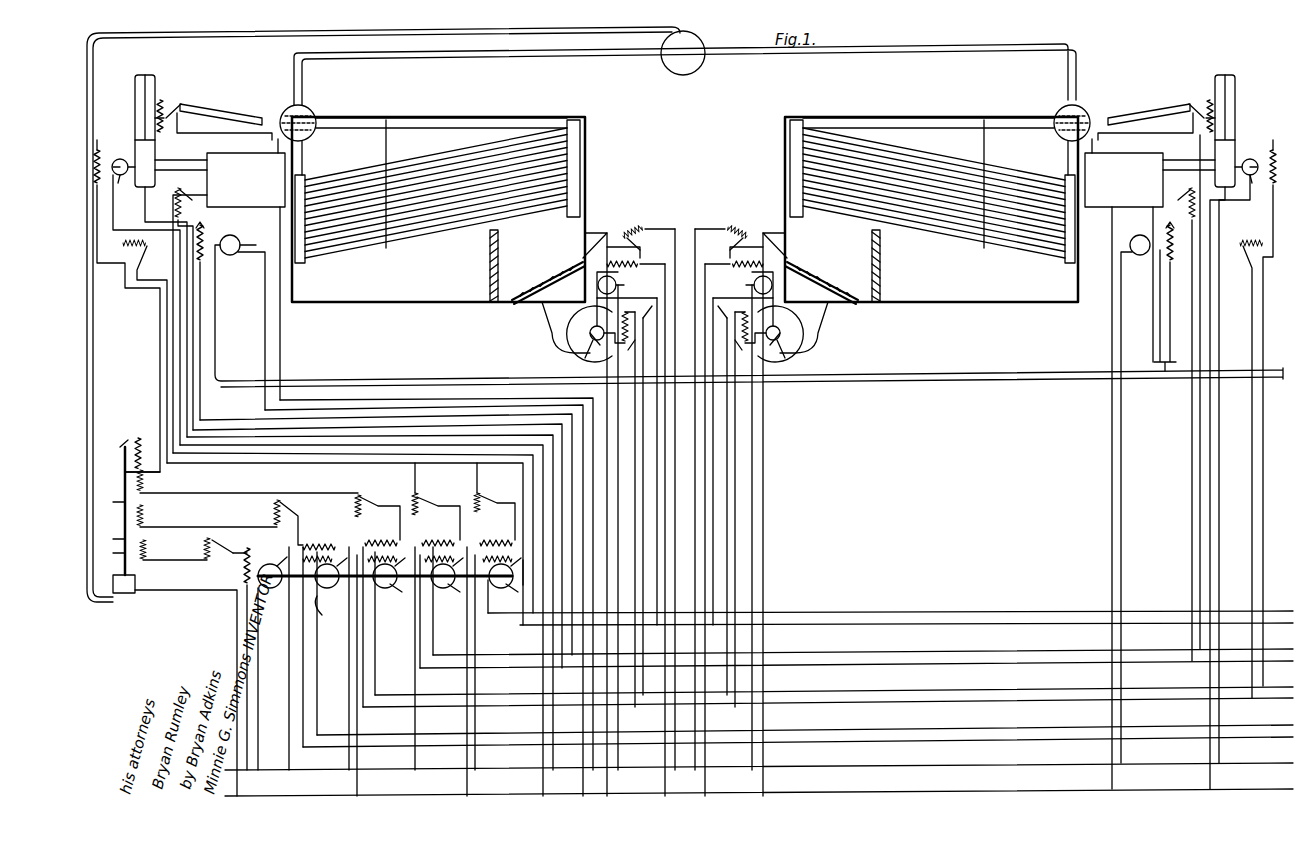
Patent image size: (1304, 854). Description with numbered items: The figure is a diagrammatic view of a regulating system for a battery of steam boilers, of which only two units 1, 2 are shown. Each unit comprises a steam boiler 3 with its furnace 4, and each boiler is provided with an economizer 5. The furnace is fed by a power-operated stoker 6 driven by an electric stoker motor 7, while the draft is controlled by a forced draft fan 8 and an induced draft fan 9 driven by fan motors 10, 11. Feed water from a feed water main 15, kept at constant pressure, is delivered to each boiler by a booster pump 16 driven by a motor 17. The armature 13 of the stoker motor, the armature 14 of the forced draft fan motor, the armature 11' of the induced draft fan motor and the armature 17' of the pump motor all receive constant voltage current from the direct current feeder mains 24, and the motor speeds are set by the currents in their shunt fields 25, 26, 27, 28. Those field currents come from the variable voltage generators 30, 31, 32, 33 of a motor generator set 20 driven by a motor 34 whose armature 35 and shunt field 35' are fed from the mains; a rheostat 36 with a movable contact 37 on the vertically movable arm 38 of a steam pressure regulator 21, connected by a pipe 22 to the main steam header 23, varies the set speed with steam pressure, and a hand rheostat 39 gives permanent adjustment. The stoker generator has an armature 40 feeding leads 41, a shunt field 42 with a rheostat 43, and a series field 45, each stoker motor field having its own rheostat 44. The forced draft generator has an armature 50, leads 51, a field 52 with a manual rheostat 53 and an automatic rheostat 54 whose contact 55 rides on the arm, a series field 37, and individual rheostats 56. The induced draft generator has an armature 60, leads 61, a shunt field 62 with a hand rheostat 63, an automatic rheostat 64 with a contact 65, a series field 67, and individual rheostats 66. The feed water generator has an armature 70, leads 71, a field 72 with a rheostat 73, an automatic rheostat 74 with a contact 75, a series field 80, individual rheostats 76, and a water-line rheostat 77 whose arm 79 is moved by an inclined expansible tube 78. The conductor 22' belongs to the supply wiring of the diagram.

The boiler unit 1 is at (508, 117).
The boiler unit 2 is at (878, 117).
The steam boiler 3 is at (685, 191).
The furnace 4 is at (685, 267).
The economizer 5 is at (685, 180).
The stoker 6 is at (596, 233).
The stoker motor 7 is at (685, 443).
The forced draft fan 8 is at (556, 345).
The induced draft fan 9 is at (147, 188).
The forced draft fan motor 10 is at (685, 321).
The induced draft fan motor 11 is at (685, 147).
The armature of induced draft fan motor 11' is at (686, 180).
The armature of stoker motor 13 is at (685, 523).
The armature of forced draft fan motor 14 is at (679, 356).
The feed water main 15 is at (380, 382).
The booster pump 16 is at (230, 256).
The feed water pump motor 17 is at (691, 216).
The armature of feed water pump motor 17' is at (256, 245).
The motor generator set 20 is at (186, 687).
The steam pressure regulator 21 is at (135, 584).
The pipe 22 is at (383, 314).
The supply conductor 22' is at (685, 68).
The main steam header 23 is at (694, 50).
The constant voltage direct current feeder mains 24 is at (894, 793).
The shunt field of stoker motor 25 is at (685, 519).
The shunt field of forced draft fan motor 26 is at (680, 352).
The shunt field of induced draft fan motor 27 is at (99, 140).
The shunt field of feed water pump motor 28 is at (688, 316).
The generator for forced draft fan motors 30 is at (331, 585).
The generator for induced draft fan motors 31 is at (389, 585).
The generator for feed water pump motors 32 is at (447, 585).
The generator for stoker motors 33 is at (505, 585).
The motor 34 is at (270, 590).
The armature of motor 35 is at (272, 554).
The shunt field of motor 35' is at (236, 658).
The rheostat 36 is at (173, 550).
The movable contact 37 is at (214, 553).
The vertically movable arm 38 is at (110, 553).
The hand operated rheostat 39 is at (205, 545).
The armature of generator 33 40 is at (518, 589).
The leads 41 is at (495, 628).
The shunt field of generator 33 42 is at (498, 538).
The manually adjusted rheostat 43 is at (491, 501).
The manually adjustable rheostat 44 is at (685, 487).
The series field of generator 33 45 is at (492, 535).
The armature of generator 30 50 is at (326, 613).
The leads 51 is at (303, 640).
The field of generator 30 52 is at (330, 533).
The manually adjustable rheostat 53 is at (296, 522).
The automatically adjustable rheostat 54 is at (207, 516).
The movable contact 55 is at (110, 502).
The manually adjustable rheostat 56 is at (685, 502).
The armature of generator 31 60 is at (404, 591).
The leads 61 is at (363, 645).
The shunt field of generator 31 62 is at (384, 541).
The hand operated rheostat 63 is at (358, 512).
The automatically regulated rheostat 64 is at (247, 481).
The movable contact 65 is at (125, 467).
The manually adjustable rheostat 66 is at (692, 456).
The series field of generator 31 67 is at (378, 533).
The armature of generator 32 70 is at (462, 592).
The leads 71 is at (420, 642).
The field of generator 32 72 is at (442, 541).
The manually adjustable rheostat 73 is at (436, 501).
The automatically operated rheostat 74 is at (142, 443).
The movable contact 75 is at (115, 499).
The manually adjustable rheostat 76 is at (685, 424).
The rheostat 77 is at (175, 96).
The expansible tube 78 is at (685, 134).
The contact arm 79 is at (184, 111).
The series field of generator 32 80 is at (436, 533).